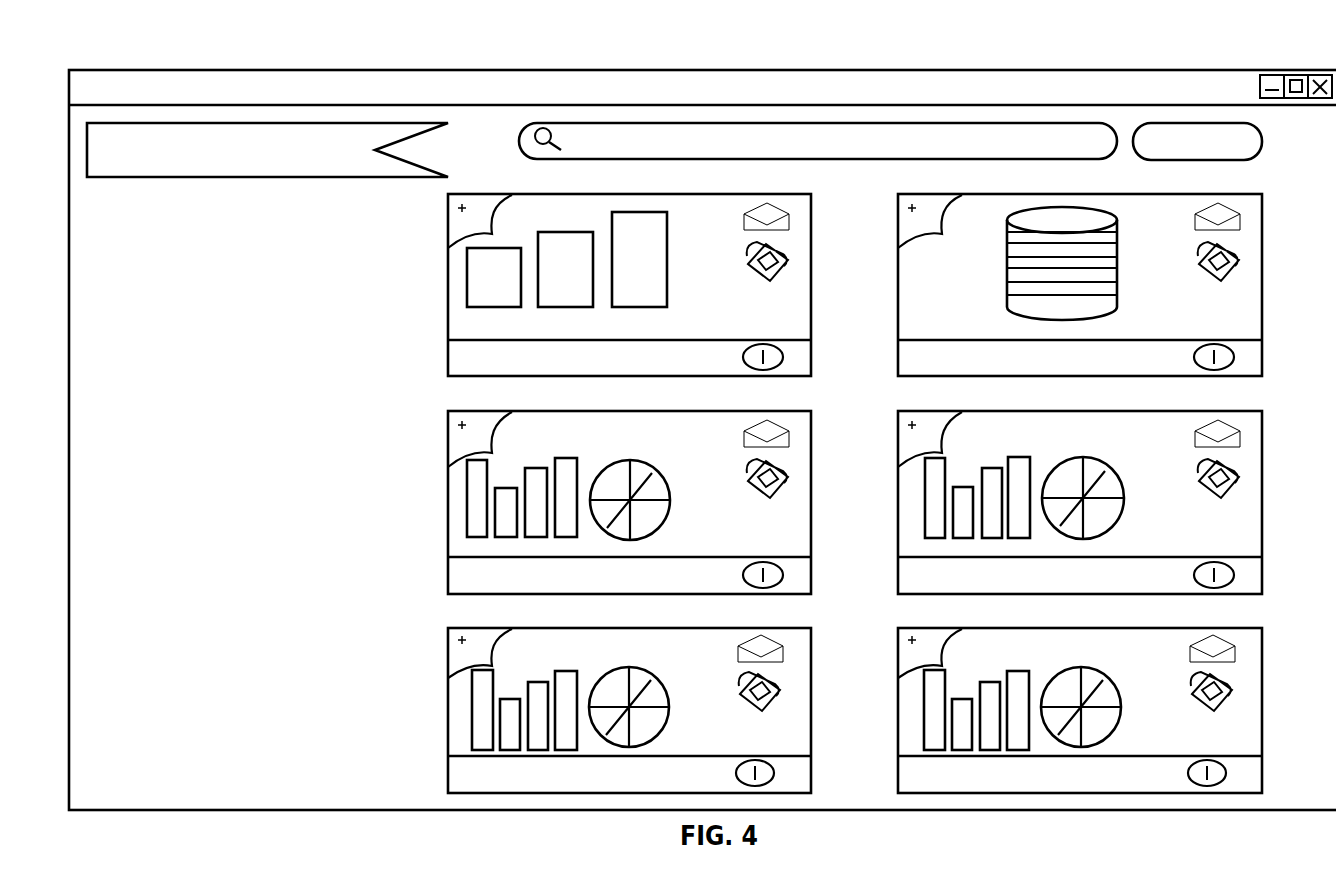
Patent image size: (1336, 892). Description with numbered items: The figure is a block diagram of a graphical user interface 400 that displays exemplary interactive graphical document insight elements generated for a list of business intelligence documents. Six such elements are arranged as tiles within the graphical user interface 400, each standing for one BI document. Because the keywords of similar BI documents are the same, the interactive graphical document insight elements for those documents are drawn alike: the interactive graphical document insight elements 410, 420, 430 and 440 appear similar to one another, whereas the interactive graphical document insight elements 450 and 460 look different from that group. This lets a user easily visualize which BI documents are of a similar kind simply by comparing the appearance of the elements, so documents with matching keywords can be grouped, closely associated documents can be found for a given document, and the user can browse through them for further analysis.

The graphical user interface 400 is at (1215, 52).
The interactive graphical document insight element 410 is at (1262, 448).
The interactive graphical document insight element 420 is at (1262, 663).
The interactive graphical document insight element 430 is at (811, 448).
The interactive graphical document insight element 440 is at (811, 663).
The interactive graphical document insight element 450 is at (1262, 231).
The interactive graphical document insight element 460 is at (811, 231).